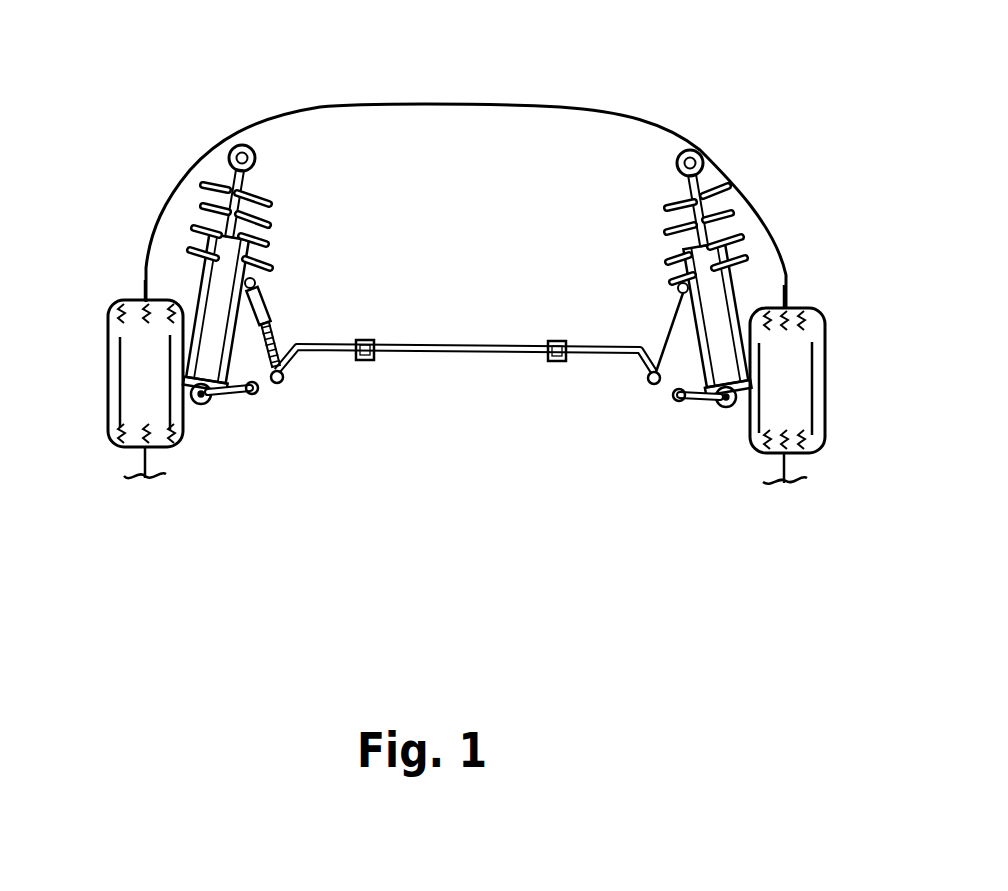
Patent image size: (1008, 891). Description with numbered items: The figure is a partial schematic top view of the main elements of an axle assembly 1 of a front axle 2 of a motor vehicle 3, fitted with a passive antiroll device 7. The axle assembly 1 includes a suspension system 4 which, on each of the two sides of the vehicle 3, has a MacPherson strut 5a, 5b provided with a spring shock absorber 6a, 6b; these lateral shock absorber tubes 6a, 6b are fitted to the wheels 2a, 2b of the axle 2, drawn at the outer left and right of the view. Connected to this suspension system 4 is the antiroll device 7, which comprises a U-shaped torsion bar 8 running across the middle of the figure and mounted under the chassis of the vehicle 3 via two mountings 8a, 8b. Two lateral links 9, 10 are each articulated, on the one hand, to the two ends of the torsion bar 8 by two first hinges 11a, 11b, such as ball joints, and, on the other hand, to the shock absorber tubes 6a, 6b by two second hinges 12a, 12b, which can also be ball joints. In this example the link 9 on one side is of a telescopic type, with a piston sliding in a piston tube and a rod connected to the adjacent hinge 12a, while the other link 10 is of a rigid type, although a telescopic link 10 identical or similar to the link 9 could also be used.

The axle assembly 1 is at (471, 527).
The front axle 2 is at (233, 402).
The wheel 2a is at (135, 376).
The wheel 2b is at (802, 382).
The motor vehicle 3 is at (528, 104).
The suspension system 4 is at (519, 376).
The MacPherson strut 5a is at (252, 195).
The MacPherson strut 5b is at (680, 198).
The spring shock absorber 6a is at (204, 268).
The spring shock absorber 6b is at (706, 273).
The passive antiroll device 7 is at (465, 360).
The U-shaped torsion bar 8 is at (508, 345).
The mounting 8a is at (367, 362).
The mounting 8b is at (560, 362).
The lateral link 9 is at (268, 305).
The lateral link 10 is at (670, 300).
The first hinge 11a is at (276, 385).
The first hinge 11b is at (652, 386).
The second hinge 12a is at (257, 280).
The second hinge 12b is at (678, 284).